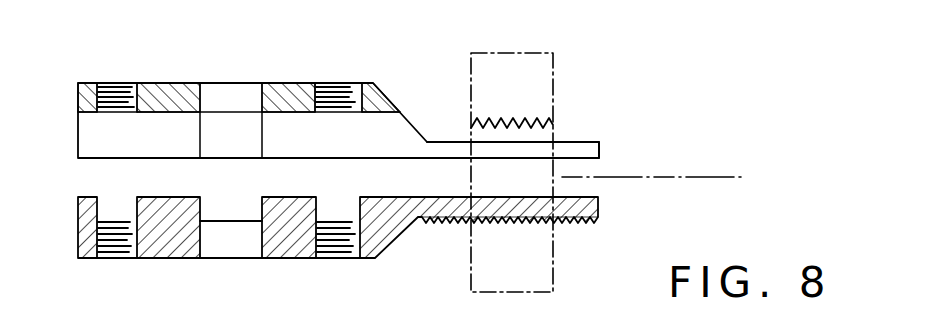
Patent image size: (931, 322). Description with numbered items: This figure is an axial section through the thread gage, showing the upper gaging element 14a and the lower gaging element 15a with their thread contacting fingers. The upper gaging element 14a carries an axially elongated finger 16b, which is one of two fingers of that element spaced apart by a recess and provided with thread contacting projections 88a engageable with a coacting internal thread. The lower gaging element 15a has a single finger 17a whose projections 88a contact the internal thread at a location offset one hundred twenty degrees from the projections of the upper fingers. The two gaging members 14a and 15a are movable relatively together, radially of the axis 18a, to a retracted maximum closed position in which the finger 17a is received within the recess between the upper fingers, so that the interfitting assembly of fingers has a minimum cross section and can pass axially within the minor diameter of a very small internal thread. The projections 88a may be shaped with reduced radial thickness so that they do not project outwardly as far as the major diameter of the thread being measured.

The upper gaging element 14a is at (78, 83).
The lower gaging element 15a is at (148, 259).
The finger 16b is at (599, 142).
The finger 17a is at (598, 209).
The axis 18a is at (708, 170).
The thread contacting projections 88a is at (440, 222).